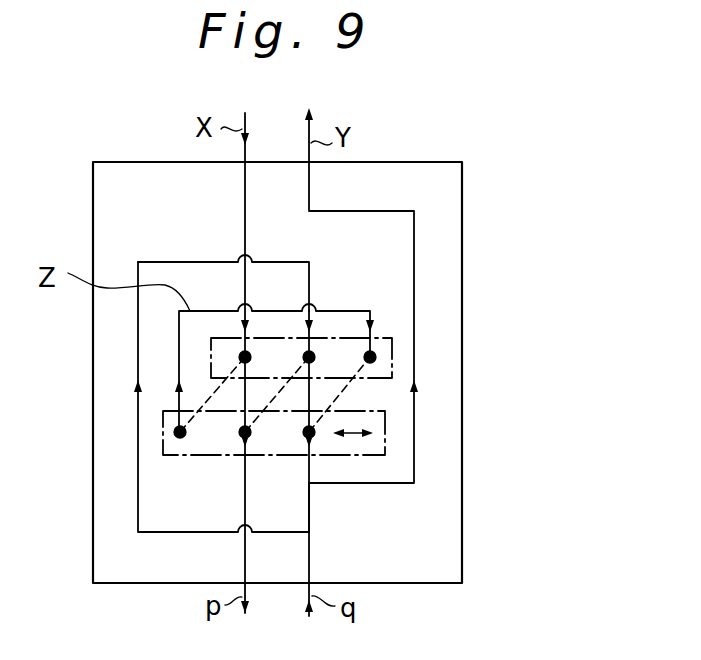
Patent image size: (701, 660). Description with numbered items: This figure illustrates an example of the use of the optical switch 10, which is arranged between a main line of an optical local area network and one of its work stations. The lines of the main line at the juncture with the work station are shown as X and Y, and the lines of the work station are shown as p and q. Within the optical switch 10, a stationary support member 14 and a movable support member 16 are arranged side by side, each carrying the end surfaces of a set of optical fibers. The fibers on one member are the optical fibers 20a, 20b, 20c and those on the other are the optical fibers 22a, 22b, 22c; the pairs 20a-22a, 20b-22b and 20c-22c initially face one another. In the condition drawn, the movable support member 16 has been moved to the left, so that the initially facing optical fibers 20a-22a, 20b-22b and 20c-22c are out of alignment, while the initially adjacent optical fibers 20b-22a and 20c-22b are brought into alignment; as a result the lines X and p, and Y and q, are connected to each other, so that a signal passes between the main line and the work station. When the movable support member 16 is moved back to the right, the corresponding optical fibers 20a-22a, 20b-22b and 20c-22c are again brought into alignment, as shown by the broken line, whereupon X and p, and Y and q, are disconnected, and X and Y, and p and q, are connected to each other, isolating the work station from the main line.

The optical switch 10 is at (441, 250).
The stationary support member 14 is at (395, 366).
The movable support member 16 is at (388, 430).
The optical fiber 20a is at (376, 354).
The optical fiber 20b is at (314, 355).
The optical fiber 20c is at (240, 357).
The optical fiber 22a is at (315, 435).
The optical fiber 22b is at (240, 435).
The optical fiber 22c is at (175, 432).